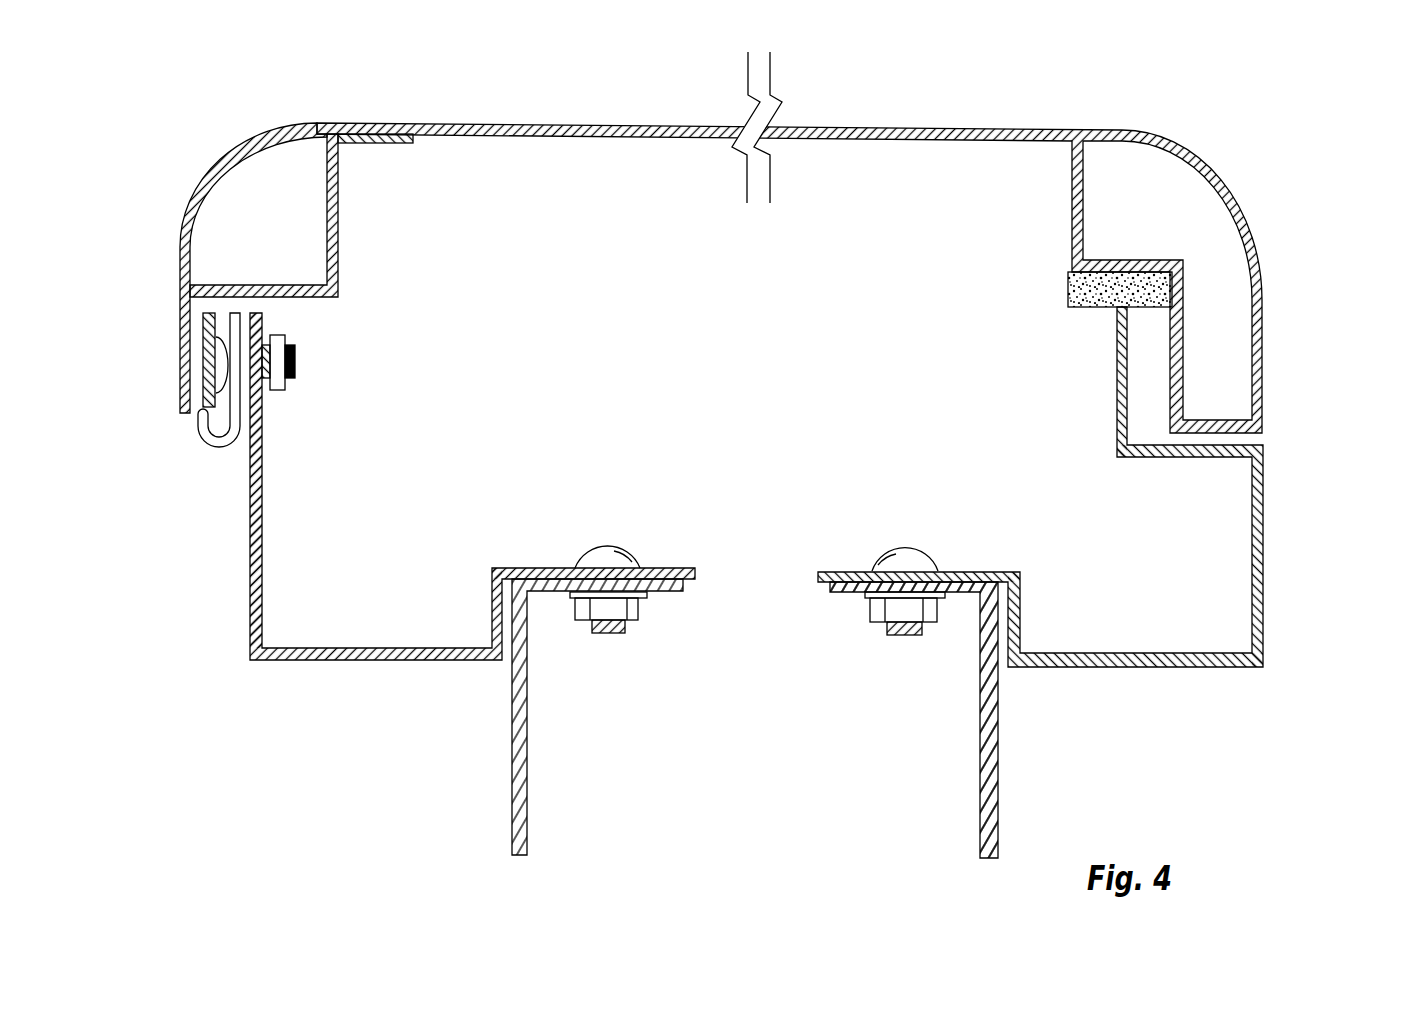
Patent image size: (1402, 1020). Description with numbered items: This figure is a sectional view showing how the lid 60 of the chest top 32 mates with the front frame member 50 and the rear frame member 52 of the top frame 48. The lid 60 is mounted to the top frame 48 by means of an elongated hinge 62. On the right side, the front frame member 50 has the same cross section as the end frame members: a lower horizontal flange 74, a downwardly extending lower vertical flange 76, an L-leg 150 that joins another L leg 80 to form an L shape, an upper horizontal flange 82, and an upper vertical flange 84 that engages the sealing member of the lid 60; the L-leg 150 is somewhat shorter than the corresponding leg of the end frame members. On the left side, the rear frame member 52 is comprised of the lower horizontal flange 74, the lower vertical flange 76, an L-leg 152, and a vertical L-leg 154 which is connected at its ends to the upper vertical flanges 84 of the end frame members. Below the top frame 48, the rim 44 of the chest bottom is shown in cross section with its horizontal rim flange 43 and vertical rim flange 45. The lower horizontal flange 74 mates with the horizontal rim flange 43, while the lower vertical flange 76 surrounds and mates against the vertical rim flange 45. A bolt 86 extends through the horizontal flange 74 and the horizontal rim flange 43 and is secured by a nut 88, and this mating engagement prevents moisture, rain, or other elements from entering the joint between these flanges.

The chest top 32 is at (222, 150).
The lid 60 is at (540, 103).
The elongated hinge 62 is at (213, 450).
The top frame 48 is at (236, 562).
The rear frame member 52 is at (418, 506).
The vertical L-leg 154 is at (263, 516).
The L-leg 152 is at (422, 645).
The lower vertical flange 76 is at (490, 603).
The lower horizontal flange 74 is at (538, 565).
The bolt 86 is at (598, 548).
The nut 88 is at (643, 612).
The horizontal rim flange 43 is at (688, 588).
The rim 44 is at (1008, 755).
The vertical rim flange 45 is at (980, 775).
The upper vertical flange 84 is at (1117, 402).
The upper horizontal flange 82 is at (1187, 455).
The L leg 80 is at (1252, 565).
The L-leg 150 is at (1197, 652).
The front frame member 50 is at (1097, 493).